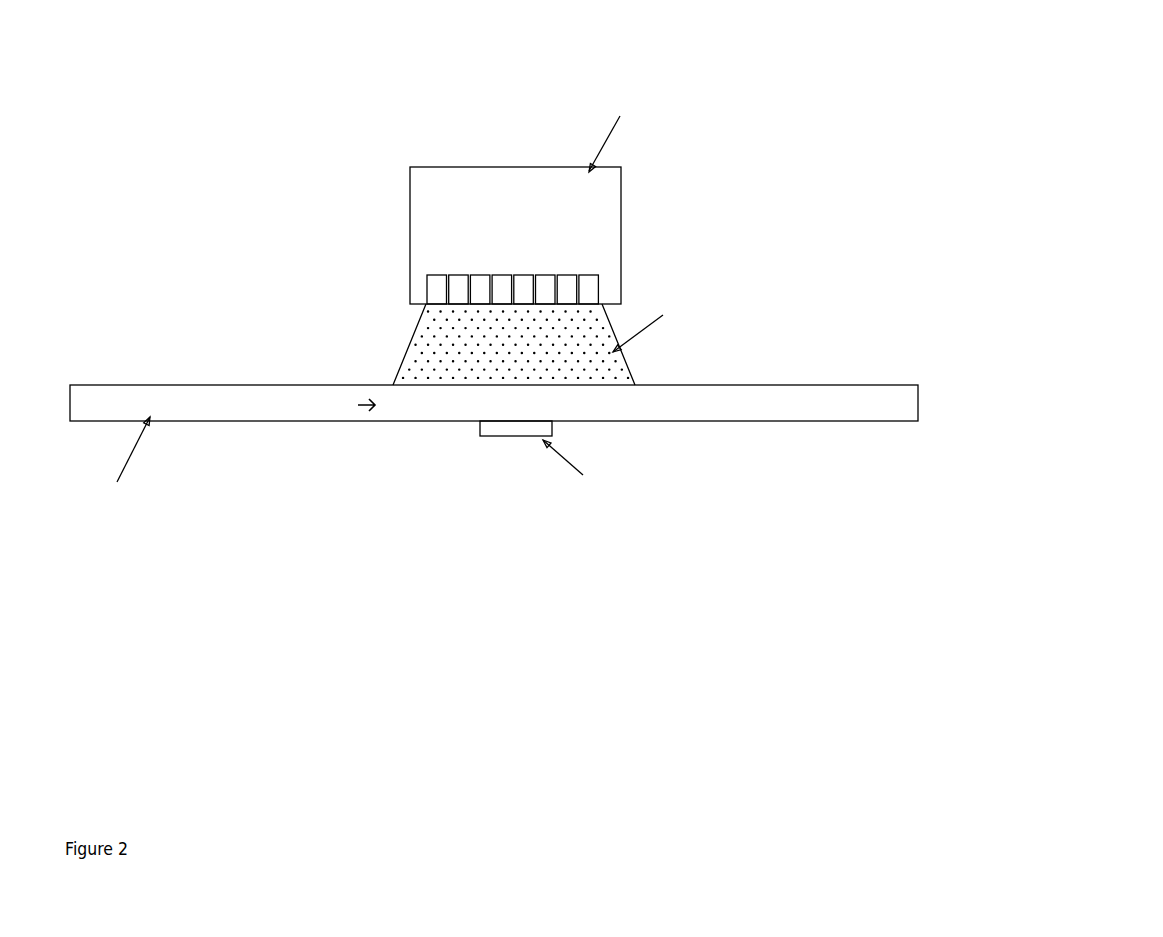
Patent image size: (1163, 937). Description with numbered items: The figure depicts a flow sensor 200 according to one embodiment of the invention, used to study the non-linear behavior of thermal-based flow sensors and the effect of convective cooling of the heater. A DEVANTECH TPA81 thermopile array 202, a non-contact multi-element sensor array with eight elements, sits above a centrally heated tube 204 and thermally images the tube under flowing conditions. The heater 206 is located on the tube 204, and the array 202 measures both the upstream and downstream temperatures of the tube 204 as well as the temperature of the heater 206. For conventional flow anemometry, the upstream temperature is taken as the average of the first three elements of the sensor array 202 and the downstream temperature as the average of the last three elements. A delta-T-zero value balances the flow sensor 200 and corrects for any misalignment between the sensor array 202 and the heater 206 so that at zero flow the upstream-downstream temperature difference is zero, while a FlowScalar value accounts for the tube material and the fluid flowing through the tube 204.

The flow sensor 200 is at (1069, 103).
The thermopile array 202 is at (622, 197).
The tube 204 is at (850, 421).
The heater 206 is at (561, 466).